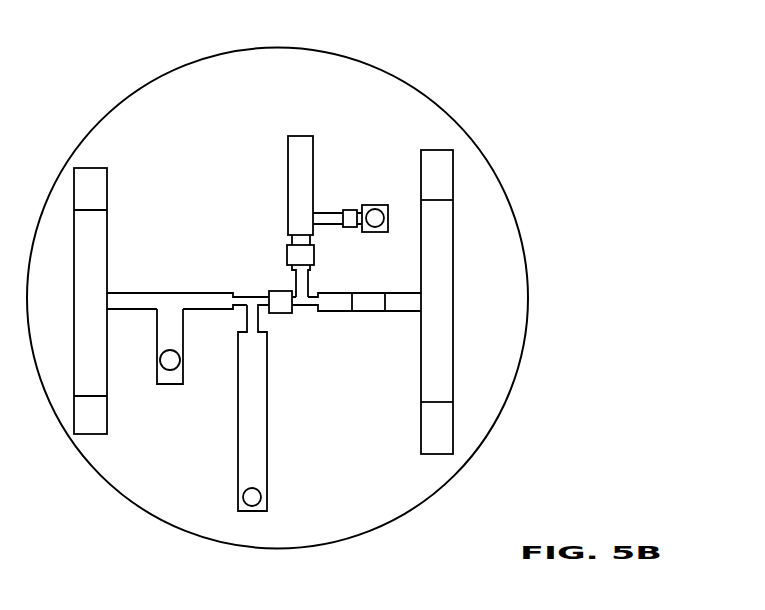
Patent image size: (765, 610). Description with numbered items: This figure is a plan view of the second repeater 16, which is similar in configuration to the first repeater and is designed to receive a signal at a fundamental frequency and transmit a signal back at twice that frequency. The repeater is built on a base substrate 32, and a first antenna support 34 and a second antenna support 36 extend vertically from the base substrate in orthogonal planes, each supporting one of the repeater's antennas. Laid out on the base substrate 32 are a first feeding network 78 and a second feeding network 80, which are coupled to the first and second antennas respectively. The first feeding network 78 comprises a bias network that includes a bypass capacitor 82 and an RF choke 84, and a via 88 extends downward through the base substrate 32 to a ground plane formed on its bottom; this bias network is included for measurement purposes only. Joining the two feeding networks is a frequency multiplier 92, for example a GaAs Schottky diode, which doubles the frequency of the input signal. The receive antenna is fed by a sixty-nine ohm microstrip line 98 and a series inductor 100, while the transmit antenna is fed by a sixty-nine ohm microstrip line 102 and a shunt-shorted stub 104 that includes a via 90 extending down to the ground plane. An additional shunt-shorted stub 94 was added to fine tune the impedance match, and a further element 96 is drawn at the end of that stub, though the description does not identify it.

The second repeater 16 is at (580, 185).
The base substrate 32 is at (266, 86).
The first antenna support 34 is at (402, 172).
The second antenna support 36 is at (131, 175).
The first feeding network 78 is at (273, 216).
The second feeding network 80 is at (264, 366).
The bypass capacitor 82 is at (350, 219).
The RF choke 84 is at (287, 255).
The via 88 is at (375, 225).
The via 90 is at (170, 370).
The frequency multiplier 92 is at (281, 303).
The additional shunt-shorted stub 94 is at (257, 408).
The outlet port 96 is at (243, 497).
The microstrip line 98 is at (402, 303).
The series inductor 100 is at (362, 303).
The microstrip line 102 is at (134, 300).
The shunt-shorted stub 104 is at (190, 367).